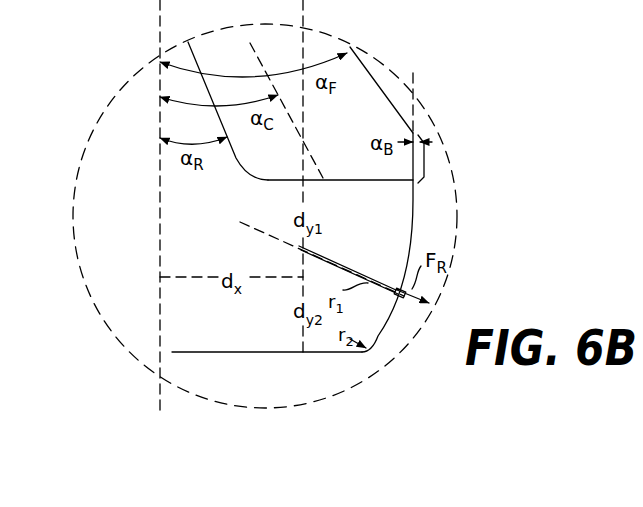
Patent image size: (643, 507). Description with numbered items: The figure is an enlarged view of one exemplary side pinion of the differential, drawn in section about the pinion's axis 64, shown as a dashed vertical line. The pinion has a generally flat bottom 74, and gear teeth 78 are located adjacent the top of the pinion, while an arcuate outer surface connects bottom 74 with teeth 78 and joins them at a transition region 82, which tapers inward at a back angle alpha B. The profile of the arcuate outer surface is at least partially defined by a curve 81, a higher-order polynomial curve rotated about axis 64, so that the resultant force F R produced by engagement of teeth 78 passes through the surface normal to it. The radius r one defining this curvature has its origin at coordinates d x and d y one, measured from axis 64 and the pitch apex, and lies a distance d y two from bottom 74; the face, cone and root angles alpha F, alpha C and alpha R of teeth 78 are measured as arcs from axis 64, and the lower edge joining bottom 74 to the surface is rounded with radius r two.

The axis 64 is at (160, 18).
The bottom 74 is at (278, 353).
The gear teeth 78 is at (355, 77).
The curve 81 is at (378, 337).
The transition region 82 is at (424, 153).